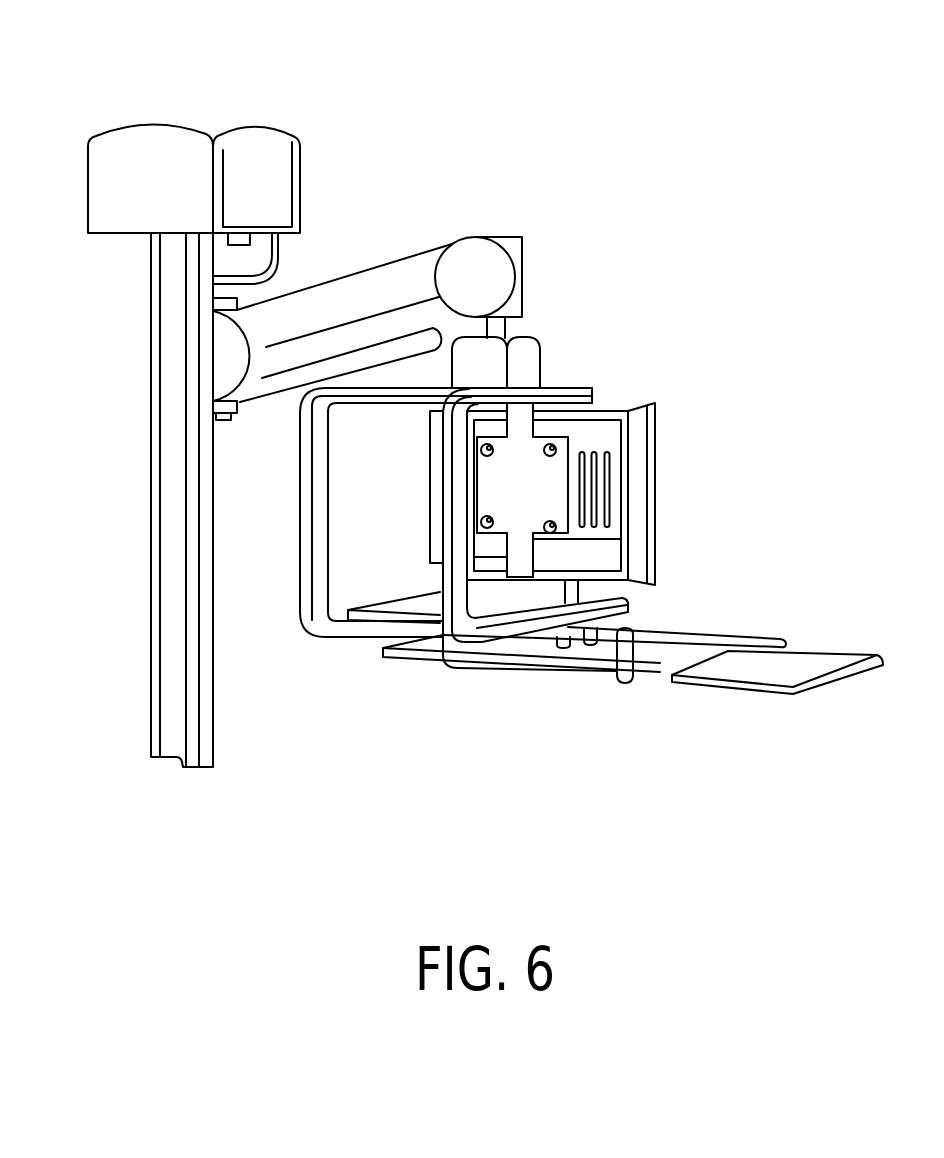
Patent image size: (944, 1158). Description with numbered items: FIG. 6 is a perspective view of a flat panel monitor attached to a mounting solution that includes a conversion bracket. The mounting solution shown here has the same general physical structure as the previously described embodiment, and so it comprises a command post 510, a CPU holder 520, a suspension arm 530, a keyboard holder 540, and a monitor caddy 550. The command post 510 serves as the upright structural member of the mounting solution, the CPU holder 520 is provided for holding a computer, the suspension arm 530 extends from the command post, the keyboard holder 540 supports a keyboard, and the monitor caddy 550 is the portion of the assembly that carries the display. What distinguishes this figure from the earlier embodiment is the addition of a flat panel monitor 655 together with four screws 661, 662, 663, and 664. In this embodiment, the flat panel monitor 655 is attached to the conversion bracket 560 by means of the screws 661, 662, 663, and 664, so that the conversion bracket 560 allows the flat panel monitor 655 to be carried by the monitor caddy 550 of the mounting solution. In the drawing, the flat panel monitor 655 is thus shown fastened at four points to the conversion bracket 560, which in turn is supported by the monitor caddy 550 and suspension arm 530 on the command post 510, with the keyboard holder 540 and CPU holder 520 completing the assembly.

The command post 510 is at (151, 516).
The CPU holder 520 is at (157, 147).
The suspension arm 530 is at (517, 237).
The keyboard holder 540 is at (537, 665).
The monitor caddy 550 is at (593, 389).
The conversion bracket 560 is at (556, 466).
The flat panel monitor 655 is at (655, 404).
The screw 661 is at (557, 449).
The screw 662 is at (558, 530).
The screw 663 is at (478, 526).
The screw 664 is at (480, 450).